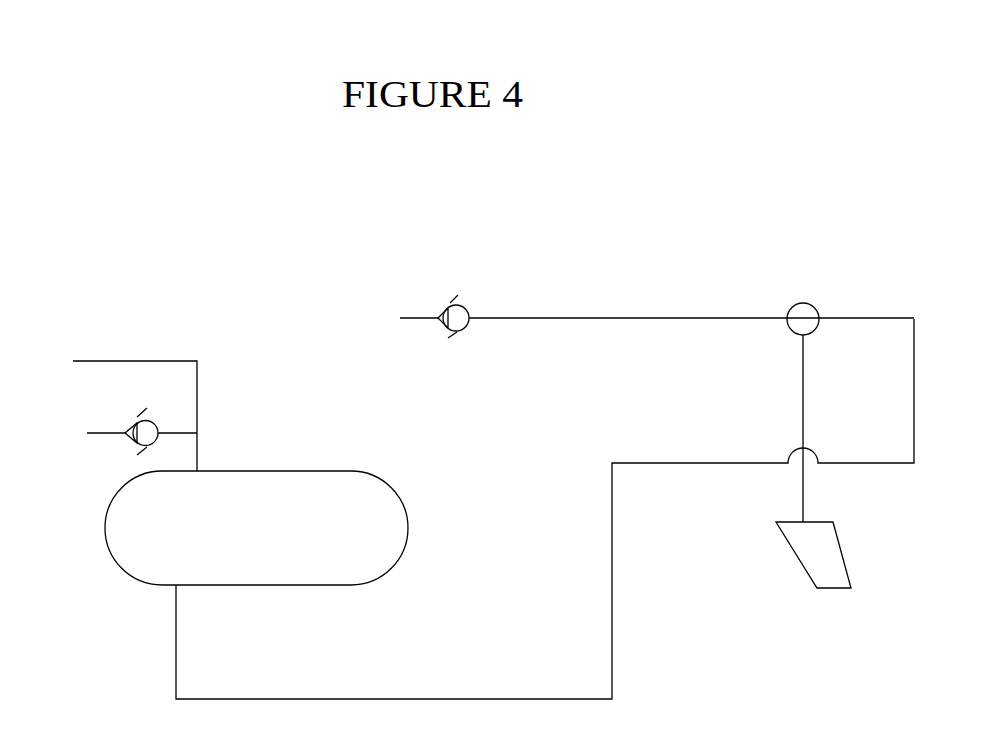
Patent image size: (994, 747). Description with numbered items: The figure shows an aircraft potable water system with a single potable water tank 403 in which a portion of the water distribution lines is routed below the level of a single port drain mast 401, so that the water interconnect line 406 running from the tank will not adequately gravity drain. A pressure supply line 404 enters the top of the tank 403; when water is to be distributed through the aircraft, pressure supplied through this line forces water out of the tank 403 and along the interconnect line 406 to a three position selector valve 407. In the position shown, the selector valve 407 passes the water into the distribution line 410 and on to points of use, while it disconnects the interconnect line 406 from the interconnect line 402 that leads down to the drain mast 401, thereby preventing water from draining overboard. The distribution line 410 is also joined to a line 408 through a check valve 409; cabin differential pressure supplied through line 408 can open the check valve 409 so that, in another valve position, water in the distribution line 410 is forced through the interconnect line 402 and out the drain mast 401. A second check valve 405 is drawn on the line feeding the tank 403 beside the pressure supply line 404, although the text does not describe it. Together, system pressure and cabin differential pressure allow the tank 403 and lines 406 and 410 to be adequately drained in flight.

The drain mast 401 is at (792, 553).
The interconnect line 402 is at (800, 408).
The potable water tank 403 is at (263, 585).
The pressure supply line 404 is at (133, 360).
The check valve 405 is at (135, 418).
The potable water interconnect line 406 is at (383, 699).
The three position selector valve 407 is at (792, 333).
The line 408 is at (105, 435).
The check valve 409 is at (448, 302).
The distribution line 410 is at (633, 318).